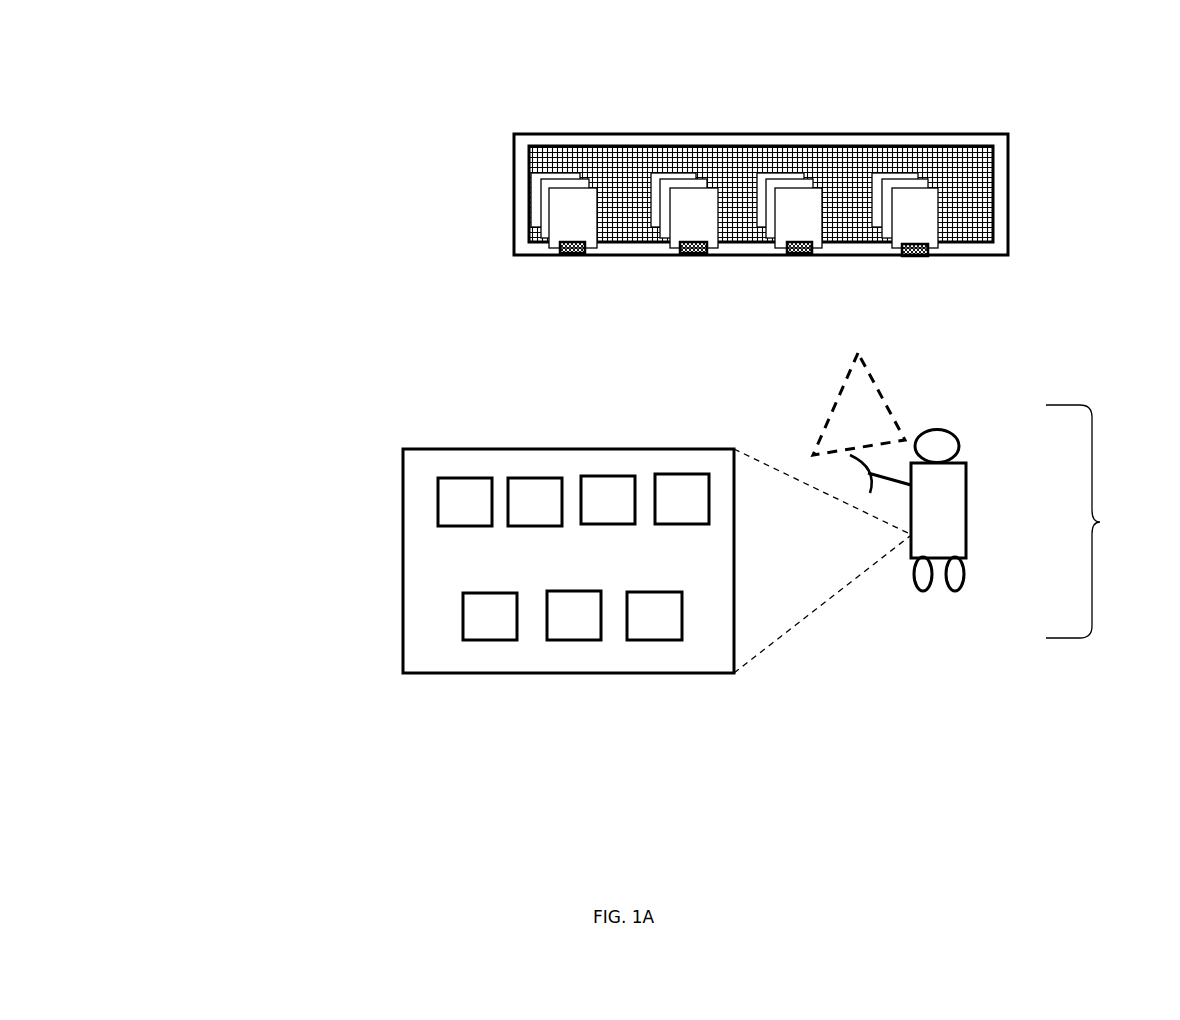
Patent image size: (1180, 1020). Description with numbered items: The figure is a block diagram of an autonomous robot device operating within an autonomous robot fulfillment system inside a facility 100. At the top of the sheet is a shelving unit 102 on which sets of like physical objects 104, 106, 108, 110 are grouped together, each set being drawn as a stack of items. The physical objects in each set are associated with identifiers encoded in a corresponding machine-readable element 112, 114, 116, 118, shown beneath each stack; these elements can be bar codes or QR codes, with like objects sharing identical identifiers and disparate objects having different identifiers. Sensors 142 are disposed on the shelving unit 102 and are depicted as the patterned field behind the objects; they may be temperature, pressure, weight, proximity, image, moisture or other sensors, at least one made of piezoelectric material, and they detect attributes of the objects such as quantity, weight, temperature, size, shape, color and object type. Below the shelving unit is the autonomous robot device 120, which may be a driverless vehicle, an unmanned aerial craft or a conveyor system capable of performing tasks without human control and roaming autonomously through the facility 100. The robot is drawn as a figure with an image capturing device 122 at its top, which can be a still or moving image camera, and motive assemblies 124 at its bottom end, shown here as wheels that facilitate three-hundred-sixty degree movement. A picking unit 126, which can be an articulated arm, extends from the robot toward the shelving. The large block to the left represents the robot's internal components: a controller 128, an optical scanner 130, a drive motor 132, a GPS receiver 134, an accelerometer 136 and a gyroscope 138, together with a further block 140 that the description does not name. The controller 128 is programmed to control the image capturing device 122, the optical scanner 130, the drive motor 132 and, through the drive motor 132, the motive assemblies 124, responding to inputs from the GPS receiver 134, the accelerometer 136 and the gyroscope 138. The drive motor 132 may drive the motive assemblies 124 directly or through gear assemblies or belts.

The facility 100 is at (331, 96).
The shelving unit 102 is at (940, 133).
The sensors 142 is at (813, 148).
The set of physical objects 104 is at (530, 212).
The set of physical objects 106 is at (660, 241).
The set of physical objects 108 is at (822, 226).
The set of physical objects 110 is at (945, 233).
The machine-readable element 112 is at (580, 256).
The machine-readable element 114 is at (683, 255).
The machine-readable element 116 is at (800, 256).
The machine-readable element 118 is at (912, 257).
The autonomous robot device 120 is at (935, 504).
The image capturing device 122 is at (958, 446).
The motive assemblies 124 is at (966, 573).
The picking unit 126 is at (870, 493).
The controller 128 is at (686, 474).
The optical scanner 130 is at (608, 475).
The drive motor 132 is at (533, 477).
The GPS receiver 134 is at (438, 500).
The accelerometer 136 is at (463, 612).
The gyroscope 138 is at (575, 640).
The display element 140 is at (682, 640).